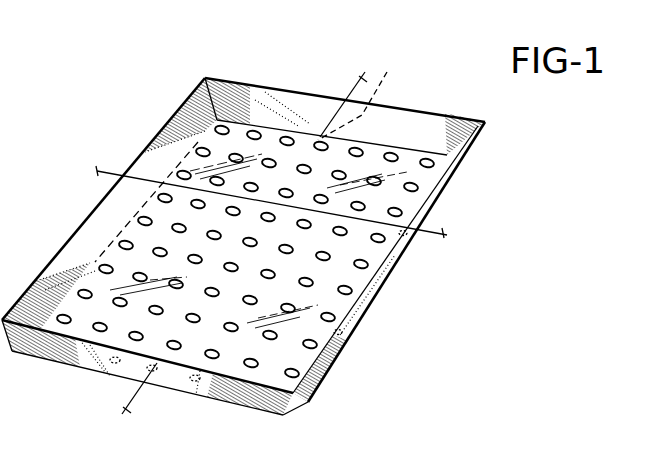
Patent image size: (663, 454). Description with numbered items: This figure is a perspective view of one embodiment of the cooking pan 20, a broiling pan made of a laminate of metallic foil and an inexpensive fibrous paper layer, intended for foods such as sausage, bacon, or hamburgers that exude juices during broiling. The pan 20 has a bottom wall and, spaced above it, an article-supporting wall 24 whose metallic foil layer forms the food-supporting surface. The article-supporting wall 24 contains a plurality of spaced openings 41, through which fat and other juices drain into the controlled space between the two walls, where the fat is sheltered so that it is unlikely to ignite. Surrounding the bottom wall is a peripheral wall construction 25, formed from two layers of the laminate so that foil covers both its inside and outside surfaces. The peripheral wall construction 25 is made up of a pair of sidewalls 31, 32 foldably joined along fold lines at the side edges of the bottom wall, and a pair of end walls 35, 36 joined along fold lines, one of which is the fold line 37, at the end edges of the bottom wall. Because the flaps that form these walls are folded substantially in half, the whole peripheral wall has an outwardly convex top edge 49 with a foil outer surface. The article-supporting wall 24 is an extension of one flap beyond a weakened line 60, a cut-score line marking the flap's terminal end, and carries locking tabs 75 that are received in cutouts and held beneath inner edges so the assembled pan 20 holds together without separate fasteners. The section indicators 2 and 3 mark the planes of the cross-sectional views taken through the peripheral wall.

The cooking pan 20 is at (110, 87).
The article-supporting wall 24 is at (355, 277).
The peripheral wall construction 25 is at (340, 360).
The sidewall 31 is at (100, 206).
The sidewall 32 is at (365, 302).
The end wall 35 is at (208, 392).
The end wall 36 is at (410, 118).
The fold line 37 is at (170, 389).
The spaced openings 41 is at (265, 158).
The top edge 49 is at (443, 117).
The weakened line 60 is at (173, 168).
The locking tabs 75 is at (347, 333).
The section line 2- 2 is at (367, 80).
The section line 3- 3 is at (99, 172).